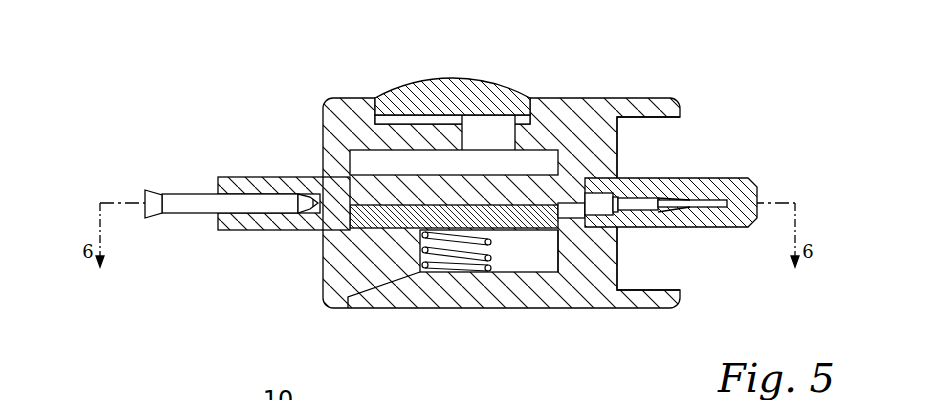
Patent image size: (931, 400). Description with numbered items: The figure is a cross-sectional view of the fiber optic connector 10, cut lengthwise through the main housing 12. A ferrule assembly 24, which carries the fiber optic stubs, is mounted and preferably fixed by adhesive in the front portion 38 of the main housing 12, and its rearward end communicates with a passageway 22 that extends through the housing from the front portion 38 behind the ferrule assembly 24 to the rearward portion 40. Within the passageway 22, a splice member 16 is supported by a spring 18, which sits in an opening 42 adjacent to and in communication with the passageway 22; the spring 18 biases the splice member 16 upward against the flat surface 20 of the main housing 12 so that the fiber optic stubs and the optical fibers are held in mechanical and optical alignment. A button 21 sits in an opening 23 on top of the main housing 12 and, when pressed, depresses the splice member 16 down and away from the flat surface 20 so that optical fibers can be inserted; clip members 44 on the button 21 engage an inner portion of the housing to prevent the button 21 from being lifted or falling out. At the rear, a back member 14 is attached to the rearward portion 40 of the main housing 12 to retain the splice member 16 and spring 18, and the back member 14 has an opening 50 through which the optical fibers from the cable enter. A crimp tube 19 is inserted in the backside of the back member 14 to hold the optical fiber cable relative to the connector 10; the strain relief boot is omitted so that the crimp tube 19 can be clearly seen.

The fiber optic connector 10 is at (265, 80).
The main housing 12 is at (640, 105).
The back member 14 is at (273, 230).
The splice member 16 is at (540, 237).
The spring 18 is at (453, 267).
The crimp tube 19 is at (178, 188).
The flat surface 20 is at (382, 230).
The button 21 is at (499, 92).
The passageway 22 is at (573, 210).
The opening 23 is at (413, 118).
The ferrule assembly 24 is at (732, 187).
The front portion 38 is at (625, 242).
The rearward portion 40 is at (357, 142).
The opening 42 is at (503, 257).
The clip members 44 is at (488, 142).
The opening 50 is at (208, 215).